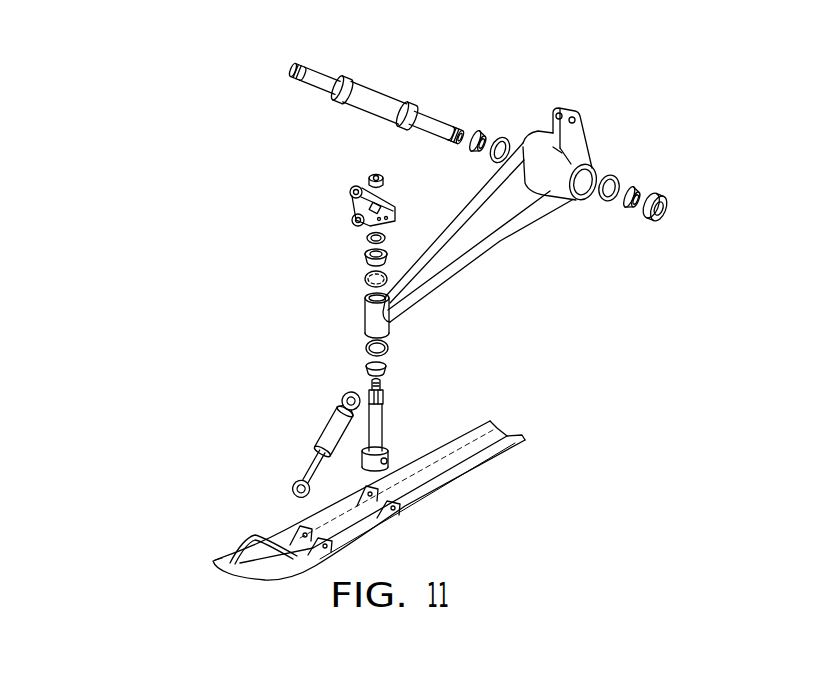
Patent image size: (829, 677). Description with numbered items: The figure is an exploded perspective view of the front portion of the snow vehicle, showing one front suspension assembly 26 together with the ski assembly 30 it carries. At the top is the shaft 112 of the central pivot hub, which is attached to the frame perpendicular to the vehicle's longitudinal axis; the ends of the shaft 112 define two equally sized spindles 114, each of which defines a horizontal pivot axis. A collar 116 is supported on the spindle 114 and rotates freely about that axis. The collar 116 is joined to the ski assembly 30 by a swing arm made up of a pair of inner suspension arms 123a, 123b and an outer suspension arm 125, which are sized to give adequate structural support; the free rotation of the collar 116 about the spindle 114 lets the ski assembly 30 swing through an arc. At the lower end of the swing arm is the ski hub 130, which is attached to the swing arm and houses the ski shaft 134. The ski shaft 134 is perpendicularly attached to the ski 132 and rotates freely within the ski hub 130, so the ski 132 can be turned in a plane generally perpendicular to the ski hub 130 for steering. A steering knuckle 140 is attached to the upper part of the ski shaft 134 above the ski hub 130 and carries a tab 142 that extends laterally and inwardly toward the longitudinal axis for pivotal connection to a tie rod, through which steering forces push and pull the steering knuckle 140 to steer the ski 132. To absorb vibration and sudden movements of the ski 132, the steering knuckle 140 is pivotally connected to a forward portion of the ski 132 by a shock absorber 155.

The front suspension assembly 26 is at (262, 138).
The ski assembly 30 is at (211, 440).
The shaft 112 is at (380, 92).
The spindle 114 is at (322, 73).
The collar 116 is at (593, 165).
The inner suspension arm 123a is at (406, 319).
The inner suspension arm 123b is at (477, 194).
The outer suspension arm 125 is at (524, 224).
The ski hub 130 is at (367, 317).
The ski 132 is at (503, 445).
The ski shaft 134 is at (383, 422).
The steering knuckle 140 is at (352, 221).
The tab 142 is at (350, 194).
The shock absorber 155 is at (328, 423).